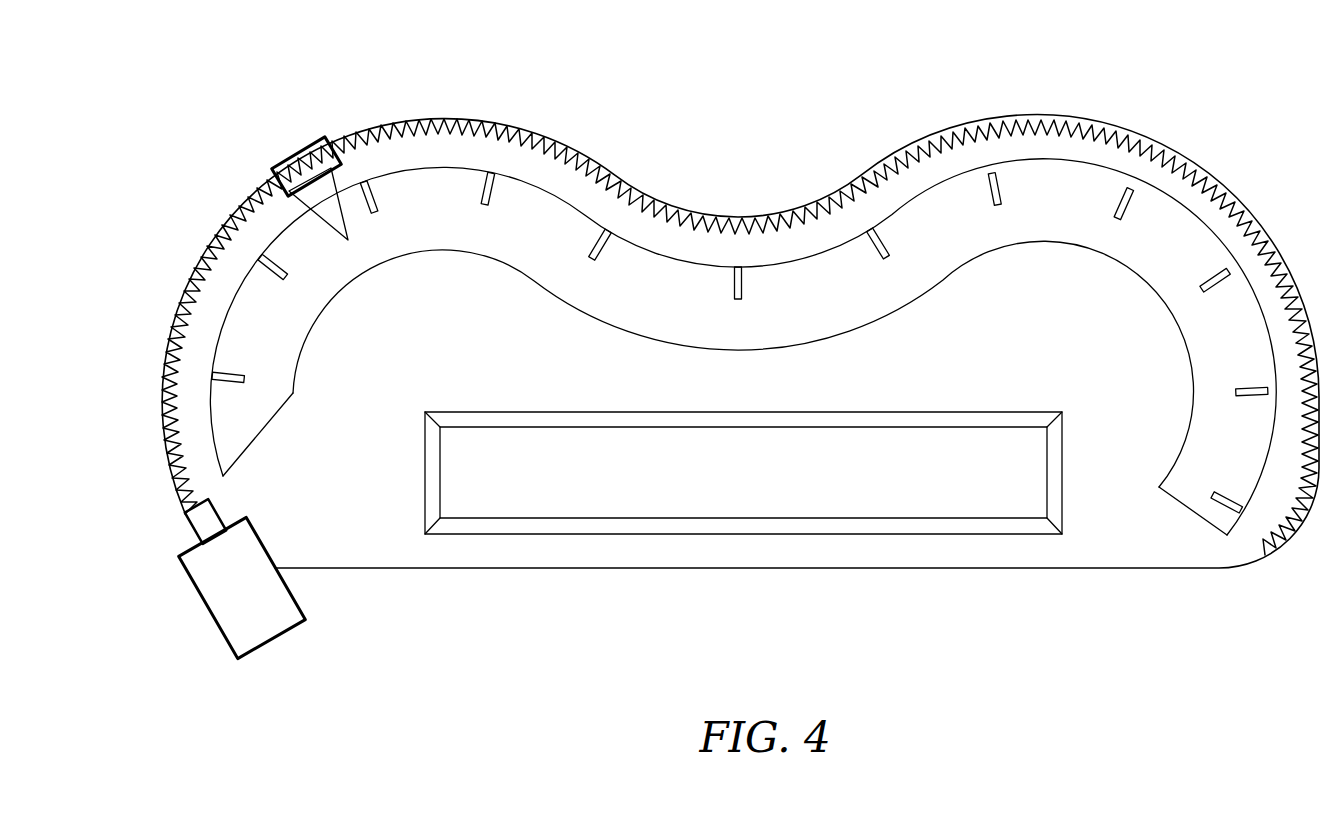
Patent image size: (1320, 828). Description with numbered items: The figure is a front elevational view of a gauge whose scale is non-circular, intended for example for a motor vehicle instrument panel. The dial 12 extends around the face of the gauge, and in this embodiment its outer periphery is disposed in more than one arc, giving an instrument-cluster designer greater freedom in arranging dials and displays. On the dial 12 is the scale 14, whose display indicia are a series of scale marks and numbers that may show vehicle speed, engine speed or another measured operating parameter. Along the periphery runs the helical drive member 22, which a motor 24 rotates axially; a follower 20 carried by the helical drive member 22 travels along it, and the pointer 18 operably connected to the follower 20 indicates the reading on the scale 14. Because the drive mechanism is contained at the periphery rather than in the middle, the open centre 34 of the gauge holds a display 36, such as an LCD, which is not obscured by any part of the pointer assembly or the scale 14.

The dial 12 is at (1061, 200).
The scale 14 is at (1128, 210).
The pointer 18 is at (324, 188).
The follower 20 is at (303, 143).
The helical drive member 22 is at (615, 175).
The motor 24 is at (265, 612).
The open centre 34 is at (1092, 498).
The display 36 is at (923, 488).